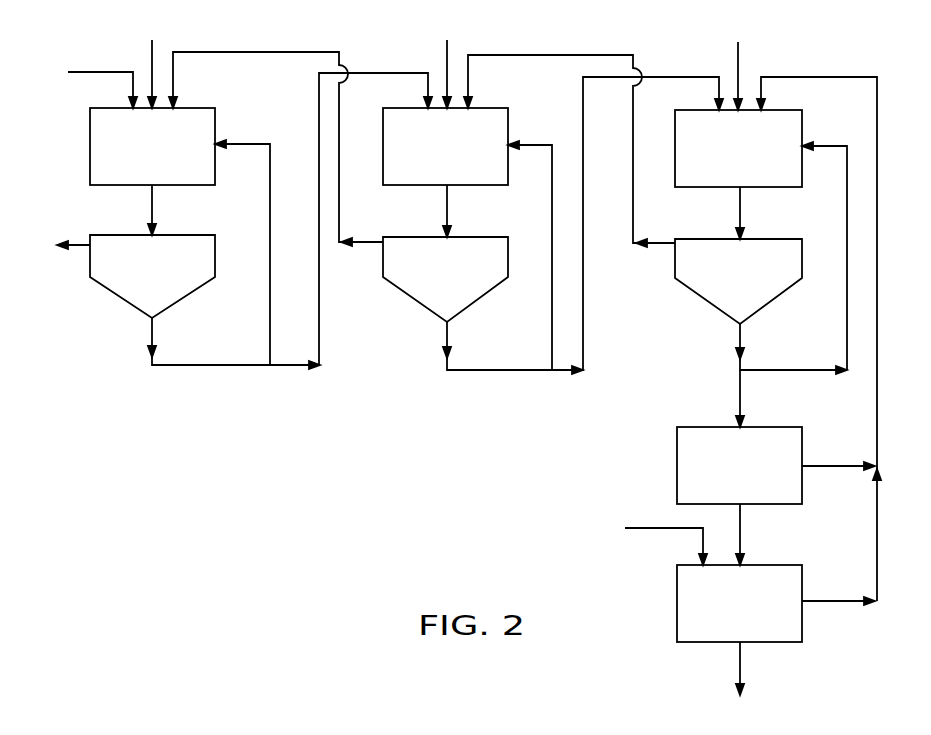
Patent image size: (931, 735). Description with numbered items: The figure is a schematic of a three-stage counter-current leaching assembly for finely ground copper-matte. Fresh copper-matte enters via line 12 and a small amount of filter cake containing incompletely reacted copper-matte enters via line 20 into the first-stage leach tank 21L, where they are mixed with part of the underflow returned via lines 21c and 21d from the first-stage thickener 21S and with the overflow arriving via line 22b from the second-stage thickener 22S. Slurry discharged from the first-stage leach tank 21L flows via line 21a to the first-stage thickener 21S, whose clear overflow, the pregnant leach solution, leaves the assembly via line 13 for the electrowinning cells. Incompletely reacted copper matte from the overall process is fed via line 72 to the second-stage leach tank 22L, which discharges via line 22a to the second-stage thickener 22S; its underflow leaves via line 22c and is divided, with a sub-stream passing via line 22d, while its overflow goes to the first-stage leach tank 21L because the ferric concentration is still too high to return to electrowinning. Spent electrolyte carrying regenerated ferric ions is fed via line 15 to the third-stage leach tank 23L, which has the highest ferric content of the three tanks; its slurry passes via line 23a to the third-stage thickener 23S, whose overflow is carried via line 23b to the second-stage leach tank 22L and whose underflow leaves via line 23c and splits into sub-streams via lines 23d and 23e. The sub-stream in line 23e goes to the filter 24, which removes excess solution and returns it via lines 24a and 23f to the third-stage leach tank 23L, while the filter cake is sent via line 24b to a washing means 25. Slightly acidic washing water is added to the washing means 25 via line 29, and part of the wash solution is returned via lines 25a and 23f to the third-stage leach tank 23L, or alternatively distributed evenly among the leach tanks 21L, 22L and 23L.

The line 12 is at (62, 82).
The line 13 is at (53, 258).
The line 15 is at (752, 40).
The line 20 is at (167, 37).
The line 29 is at (622, 542).
The line 72 is at (462, 39).
The 1st-stage leach tank 21L is at (175, 162).
The 1st-stage thickener 21S is at (177, 287).
The line 21a is at (153, 205).
The line 21c is at (367, 73).
The line 21d is at (239, 144).
The 2nd-stage leach tank 22L is at (470, 163).
The 2nd-stage thickener 22S is at (472, 288).
The line 22a is at (448, 205).
The line 22b is at (244, 52).
The line 22c is at (448, 338).
The line 22d is at (527, 145).
The 3rd-stage leach tank 23L is at (763, 165).
The 3rd-stage thickener 23S is at (763, 290).
The line 23a is at (741, 206).
The line 23b is at (500, 55).
The line 23c is at (741, 336).
The line 23d is at (825, 146).
The line 23e is at (741, 392).
The line 23f is at (797, 77).
The filter 24 is at (757, 481).
The line 24a is at (815, 466).
The line 24b is at (741, 534).
The washing means 25 is at (757, 616).
The line 25a is at (815, 601).